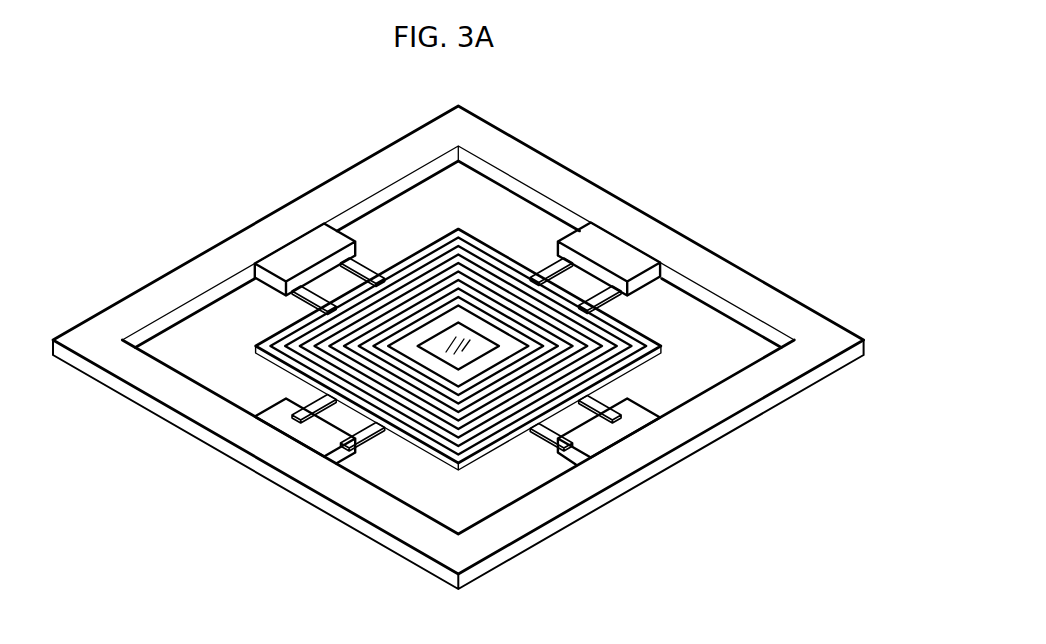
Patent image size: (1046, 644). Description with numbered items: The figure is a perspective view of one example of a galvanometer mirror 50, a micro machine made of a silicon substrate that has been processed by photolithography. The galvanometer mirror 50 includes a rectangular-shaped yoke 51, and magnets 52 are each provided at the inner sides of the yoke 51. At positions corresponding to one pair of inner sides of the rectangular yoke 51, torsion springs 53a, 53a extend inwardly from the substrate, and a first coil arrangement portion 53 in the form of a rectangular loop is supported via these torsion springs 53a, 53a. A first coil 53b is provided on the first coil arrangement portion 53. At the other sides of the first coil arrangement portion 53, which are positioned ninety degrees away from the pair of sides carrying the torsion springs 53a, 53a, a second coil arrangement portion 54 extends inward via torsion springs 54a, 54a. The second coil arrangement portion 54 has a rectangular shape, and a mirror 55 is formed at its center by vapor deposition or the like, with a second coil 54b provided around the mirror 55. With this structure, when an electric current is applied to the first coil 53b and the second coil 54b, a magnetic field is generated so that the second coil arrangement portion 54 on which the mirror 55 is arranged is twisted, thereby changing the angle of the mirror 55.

The galvanometer mirror 50 is at (636, 124).
The yoke 51 is at (500, 140).
The magnet 52 is at (300, 247).
The first coil arrangement portion 53 is at (710, 373).
The torsion spring 53a is at (597, 289).
The first coil 53b is at (637, 333).
The second coil arrangement portion 54 is at (433, 292).
The torsion spring 54a is at (330, 342).
The second coil 54b is at (467, 385).
The mirror 55 is at (477, 340).